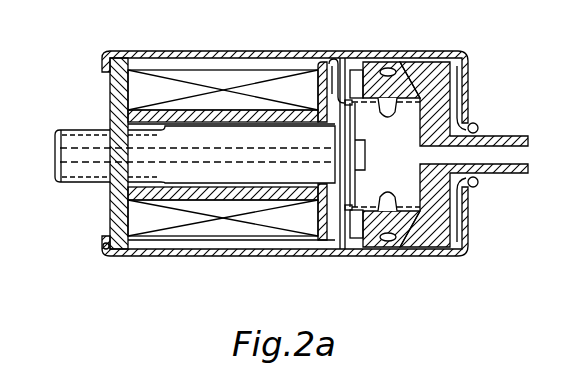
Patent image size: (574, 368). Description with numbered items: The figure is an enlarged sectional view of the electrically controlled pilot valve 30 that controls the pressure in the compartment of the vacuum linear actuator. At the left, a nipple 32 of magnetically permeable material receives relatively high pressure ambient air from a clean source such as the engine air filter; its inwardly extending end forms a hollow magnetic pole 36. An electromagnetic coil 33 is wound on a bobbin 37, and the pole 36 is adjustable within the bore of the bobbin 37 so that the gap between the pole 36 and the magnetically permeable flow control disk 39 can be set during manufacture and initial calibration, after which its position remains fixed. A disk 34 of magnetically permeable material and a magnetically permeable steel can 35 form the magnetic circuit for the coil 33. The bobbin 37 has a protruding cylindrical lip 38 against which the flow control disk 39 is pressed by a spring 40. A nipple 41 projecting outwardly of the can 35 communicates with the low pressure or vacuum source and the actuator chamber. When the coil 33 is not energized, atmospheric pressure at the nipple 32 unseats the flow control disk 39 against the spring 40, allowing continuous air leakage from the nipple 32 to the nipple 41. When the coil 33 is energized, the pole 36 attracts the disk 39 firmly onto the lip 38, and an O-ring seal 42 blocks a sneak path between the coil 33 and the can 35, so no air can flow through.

The pilot valve 30 is at (97, 263).
The nipple 32 is at (80, 129).
The electromagnetic coil 33 is at (235, 78).
The disk 34 is at (118, 107).
The can 35 is at (445, 63).
The magnetic pole 36 is at (232, 168).
The bobbin 37 is at (197, 110).
The protruding cylindrical lip 38 is at (337, 75).
The flow control disk 39 is at (349, 247).
The spring 40 is at (393, 108).
The nipple 41 is at (502, 134).
The O-ring seal 42 is at (390, 239).